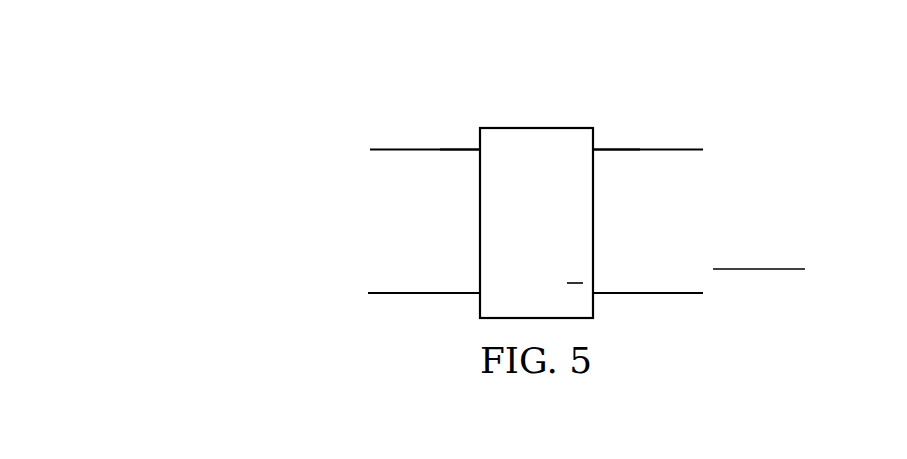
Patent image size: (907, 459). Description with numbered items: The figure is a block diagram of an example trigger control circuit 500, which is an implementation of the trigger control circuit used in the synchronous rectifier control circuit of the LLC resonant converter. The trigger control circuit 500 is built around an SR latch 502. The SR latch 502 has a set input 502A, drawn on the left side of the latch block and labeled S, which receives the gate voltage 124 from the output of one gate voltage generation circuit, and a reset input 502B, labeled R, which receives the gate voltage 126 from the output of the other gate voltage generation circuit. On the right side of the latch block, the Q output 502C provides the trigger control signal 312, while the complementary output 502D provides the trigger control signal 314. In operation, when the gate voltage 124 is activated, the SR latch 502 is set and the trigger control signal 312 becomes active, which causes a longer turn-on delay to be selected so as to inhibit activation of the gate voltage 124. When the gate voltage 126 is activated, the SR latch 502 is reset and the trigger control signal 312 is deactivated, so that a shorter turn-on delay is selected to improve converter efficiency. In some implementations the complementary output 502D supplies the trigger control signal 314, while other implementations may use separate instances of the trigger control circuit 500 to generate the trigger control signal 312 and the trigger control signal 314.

The trigger control circuit 500 is at (290, 127).
The SR latch 502 is at (535, 126).
The input 502A is at (466, 148).
The input 502B is at (466, 292).
The output 502C is at (605, 148).
The complementary output 502D is at (607, 292).
The gate voltage 124 is at (424, 152).
The gate voltage 126 is at (423, 295).
The trigger control signal 312 is at (647, 151).
The trigger control signal 314 is at (647, 295).